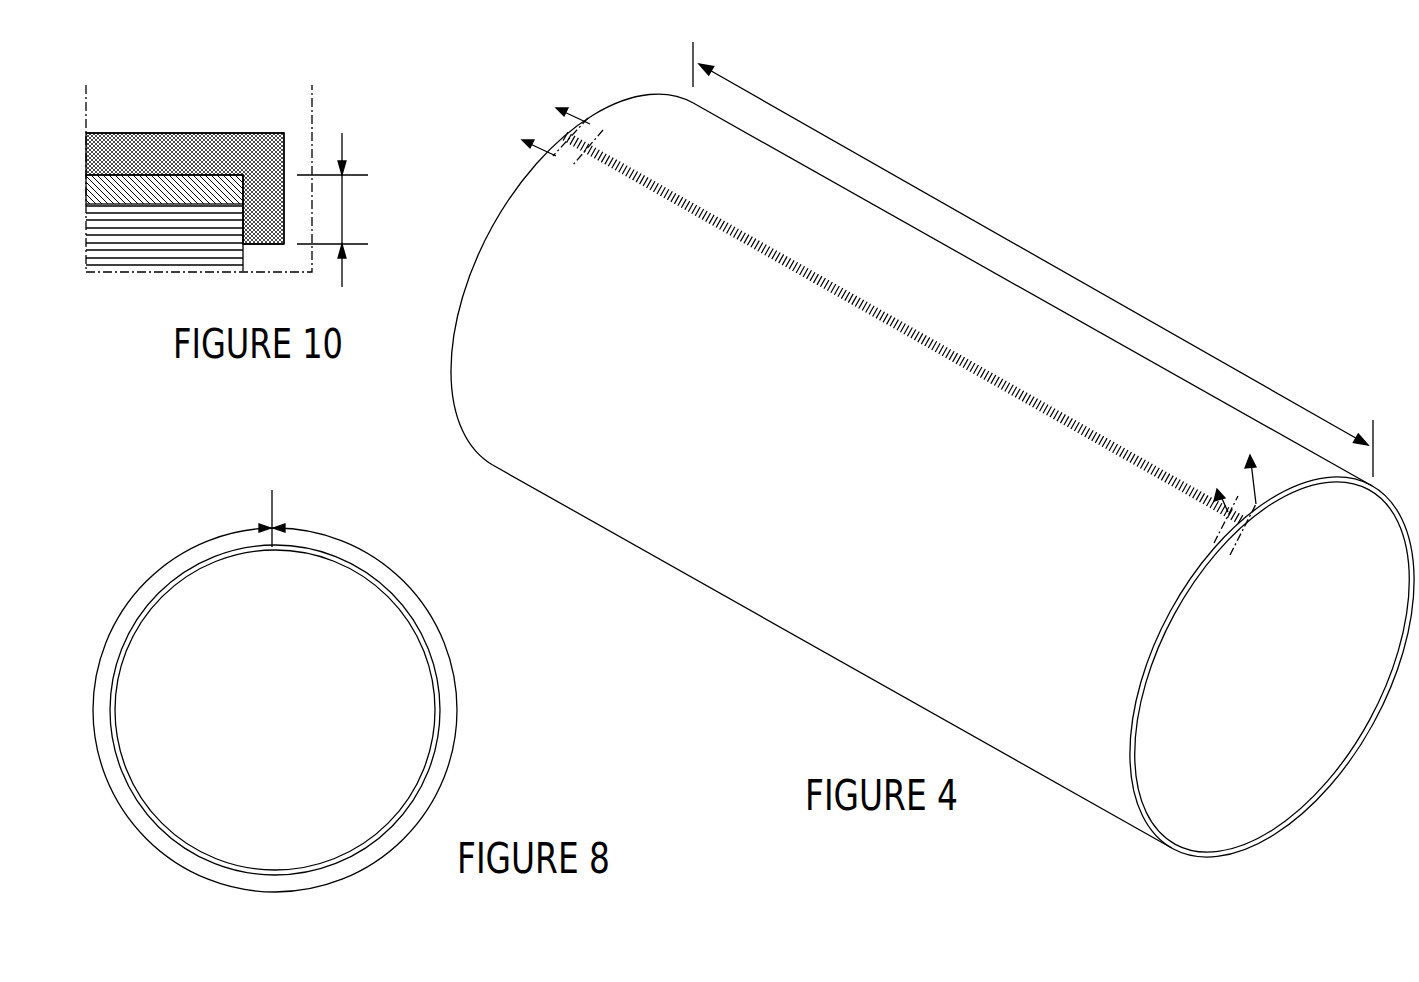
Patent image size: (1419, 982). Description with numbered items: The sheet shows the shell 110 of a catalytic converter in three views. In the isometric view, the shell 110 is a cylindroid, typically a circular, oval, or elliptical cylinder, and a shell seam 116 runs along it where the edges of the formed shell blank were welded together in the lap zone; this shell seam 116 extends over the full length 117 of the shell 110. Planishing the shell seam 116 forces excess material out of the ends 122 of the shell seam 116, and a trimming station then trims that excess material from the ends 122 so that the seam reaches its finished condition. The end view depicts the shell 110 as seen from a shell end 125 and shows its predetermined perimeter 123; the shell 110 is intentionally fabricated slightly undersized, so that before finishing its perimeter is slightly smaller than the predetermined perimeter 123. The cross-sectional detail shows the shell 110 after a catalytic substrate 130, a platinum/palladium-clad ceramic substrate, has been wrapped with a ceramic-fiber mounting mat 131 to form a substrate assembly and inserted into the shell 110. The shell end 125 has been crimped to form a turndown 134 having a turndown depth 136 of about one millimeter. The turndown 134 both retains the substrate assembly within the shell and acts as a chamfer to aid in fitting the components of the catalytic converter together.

In FIG. 10, the shell 110 is at (140, 141).
In FIG. 8, the shell 110 is at (543, 800).
In FIG. 4, the shell 110 is at (810, 717).
In FIG. 4, the shell seam 116 is at (1017, 386).
In FIG. 4, the full length 117 is at (903, 178).
In FIG. 4, the ends of shell seam 122 is at (563, 136).
In FIG. 8, the perimeter 123 is at (440, 632).
In FIG. 10, the shell end 125 is at (278, 147).
In FIG. 8, the shell end 125 is at (437, 713).
In FIG. 4, the shell end 125 is at (481, 247).
In FIG. 10, the catalytic substrate 130 is at (125, 250).
In FIG. 10, the ceramic-fiber mounting mat 131 is at (200, 188).
In FIG. 10, the turndown 134 is at (265, 237).
In FIG. 10, the turndown depth 136 is at (342, 207).